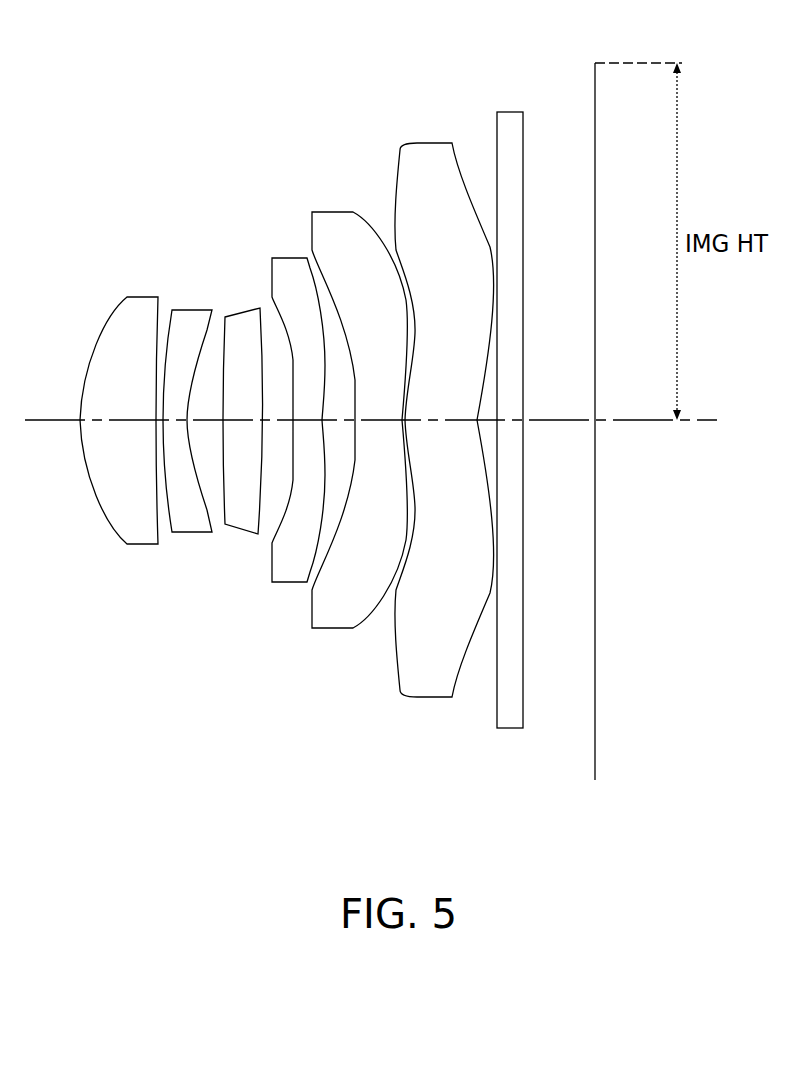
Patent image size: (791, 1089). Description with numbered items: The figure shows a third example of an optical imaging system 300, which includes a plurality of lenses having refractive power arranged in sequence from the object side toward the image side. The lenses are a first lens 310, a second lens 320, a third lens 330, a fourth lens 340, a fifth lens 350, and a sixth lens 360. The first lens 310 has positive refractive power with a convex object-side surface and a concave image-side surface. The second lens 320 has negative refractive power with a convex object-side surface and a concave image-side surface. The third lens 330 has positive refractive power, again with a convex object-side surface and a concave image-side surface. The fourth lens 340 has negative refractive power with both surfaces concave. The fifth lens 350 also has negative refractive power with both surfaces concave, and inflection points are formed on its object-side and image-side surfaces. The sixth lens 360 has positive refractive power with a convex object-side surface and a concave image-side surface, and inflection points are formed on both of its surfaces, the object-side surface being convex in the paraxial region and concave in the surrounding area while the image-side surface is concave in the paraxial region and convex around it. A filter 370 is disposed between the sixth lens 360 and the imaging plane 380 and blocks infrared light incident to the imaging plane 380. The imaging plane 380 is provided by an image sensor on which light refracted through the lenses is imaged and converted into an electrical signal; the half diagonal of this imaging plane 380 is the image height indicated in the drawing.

The optical imaging system 300 is at (207, 118).
The first lens 310 is at (142, 545).
The second lens 320 is at (190, 532).
The third lens 330 is at (245, 532).
The fourth lens 340 is at (290, 583).
The fifth lens 350 is at (333, 630).
The sixth lens 360 is at (435, 697).
The filter 370 is at (510, 730).
The imaging plane 380 is at (593, 745).